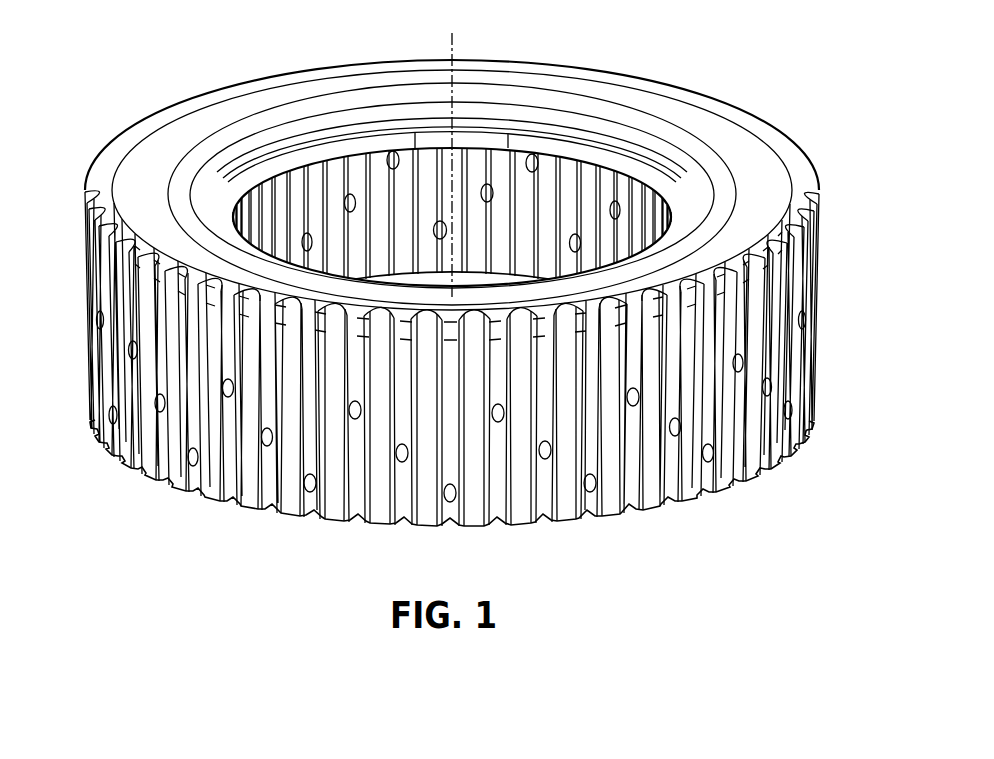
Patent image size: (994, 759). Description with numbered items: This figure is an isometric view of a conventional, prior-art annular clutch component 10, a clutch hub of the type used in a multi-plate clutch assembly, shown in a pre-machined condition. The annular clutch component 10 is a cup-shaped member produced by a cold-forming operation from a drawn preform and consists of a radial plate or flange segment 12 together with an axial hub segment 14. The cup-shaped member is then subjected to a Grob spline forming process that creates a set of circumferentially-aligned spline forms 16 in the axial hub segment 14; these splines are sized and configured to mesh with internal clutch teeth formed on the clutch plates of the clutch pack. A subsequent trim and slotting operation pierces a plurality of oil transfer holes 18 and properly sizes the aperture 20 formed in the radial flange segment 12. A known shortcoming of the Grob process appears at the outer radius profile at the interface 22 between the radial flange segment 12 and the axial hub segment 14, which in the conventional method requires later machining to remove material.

The annular clutch component 10 is at (822, 108).
The radial flange segment 12 is at (744, 141).
The axial hub segment 14 is at (820, 345).
The spline forms 16 is at (357, 500).
The oil transfer holes 18 is at (458, 496).
The aperture 20 is at (567, 150).
The interface 22 is at (107, 153).